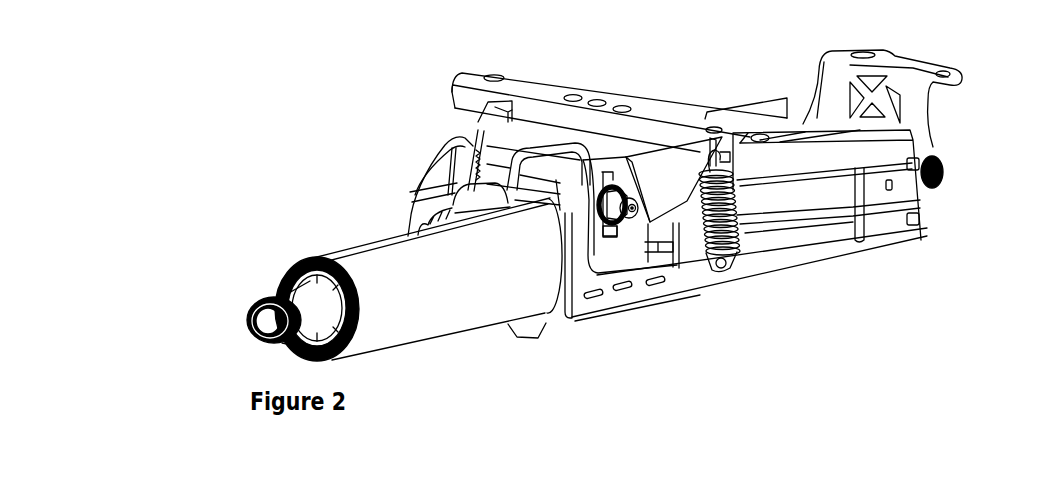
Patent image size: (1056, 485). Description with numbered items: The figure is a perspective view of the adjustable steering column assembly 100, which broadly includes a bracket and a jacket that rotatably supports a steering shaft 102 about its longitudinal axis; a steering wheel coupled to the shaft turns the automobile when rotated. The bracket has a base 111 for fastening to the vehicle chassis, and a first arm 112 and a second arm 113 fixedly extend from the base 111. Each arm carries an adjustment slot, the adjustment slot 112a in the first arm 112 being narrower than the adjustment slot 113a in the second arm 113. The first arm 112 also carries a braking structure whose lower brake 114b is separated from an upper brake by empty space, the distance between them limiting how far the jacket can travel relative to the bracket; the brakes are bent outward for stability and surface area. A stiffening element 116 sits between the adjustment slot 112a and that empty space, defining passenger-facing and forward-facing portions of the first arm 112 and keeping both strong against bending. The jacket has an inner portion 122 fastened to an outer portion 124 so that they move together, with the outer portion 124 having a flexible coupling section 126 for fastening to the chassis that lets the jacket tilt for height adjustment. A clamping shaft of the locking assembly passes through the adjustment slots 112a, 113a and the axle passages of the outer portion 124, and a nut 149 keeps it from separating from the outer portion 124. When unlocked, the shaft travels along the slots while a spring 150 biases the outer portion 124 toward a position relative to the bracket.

The adjustable steering column assembly 100 is at (346, 122).
The steering shaft 102 is at (267, 281).
The base 111 is at (533, 88).
The first arm 112 is at (624, 164).
The adjustment slot 112a is at (603, 180).
The second arm 113 is at (465, 127).
The adjustment slot 113a is at (495, 100).
The lower brake 114b is at (678, 256).
The stiffening element 116 is at (668, 188).
The inner portion 122 is at (429, 320).
The outer portion 124 is at (527, 342).
The coupling section 126 is at (904, 54).
The nut 149 is at (627, 243).
The spring 150 is at (742, 232).